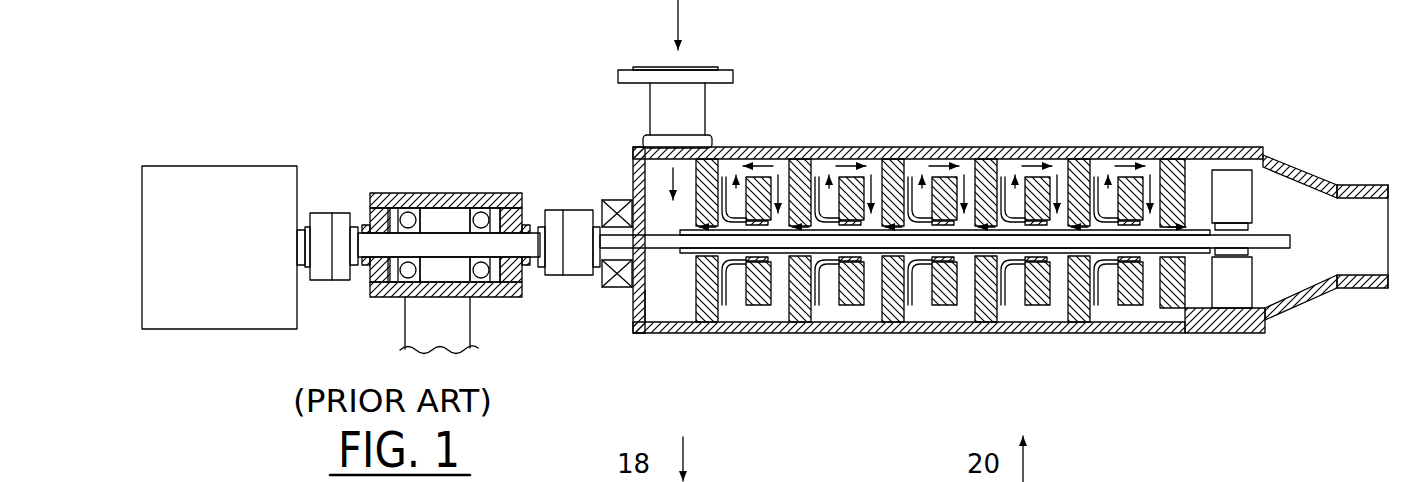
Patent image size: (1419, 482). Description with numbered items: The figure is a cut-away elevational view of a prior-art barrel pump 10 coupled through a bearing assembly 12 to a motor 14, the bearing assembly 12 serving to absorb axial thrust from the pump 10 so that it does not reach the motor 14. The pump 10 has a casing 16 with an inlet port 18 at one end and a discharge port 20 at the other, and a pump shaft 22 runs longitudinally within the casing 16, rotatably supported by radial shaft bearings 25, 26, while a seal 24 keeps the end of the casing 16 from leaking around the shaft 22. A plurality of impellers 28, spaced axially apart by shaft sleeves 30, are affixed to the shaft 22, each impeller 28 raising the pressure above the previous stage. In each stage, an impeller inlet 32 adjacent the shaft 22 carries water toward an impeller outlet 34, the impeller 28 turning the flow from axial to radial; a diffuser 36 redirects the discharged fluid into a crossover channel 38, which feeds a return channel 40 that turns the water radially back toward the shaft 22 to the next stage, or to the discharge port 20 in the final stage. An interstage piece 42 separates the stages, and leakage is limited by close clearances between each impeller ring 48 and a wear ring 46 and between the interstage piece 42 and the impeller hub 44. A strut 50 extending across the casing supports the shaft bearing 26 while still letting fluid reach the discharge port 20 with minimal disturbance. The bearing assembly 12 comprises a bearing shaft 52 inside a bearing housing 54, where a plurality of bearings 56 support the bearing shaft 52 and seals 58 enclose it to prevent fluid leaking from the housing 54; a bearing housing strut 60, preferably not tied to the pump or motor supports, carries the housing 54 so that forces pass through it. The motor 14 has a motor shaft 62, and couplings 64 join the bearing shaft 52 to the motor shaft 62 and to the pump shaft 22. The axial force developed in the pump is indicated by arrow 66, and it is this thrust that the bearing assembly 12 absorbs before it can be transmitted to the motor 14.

The barrel pump 10 is at (980, 194).
The bearing assembly 12 is at (436, 239).
The motor 14 is at (203, 175).
The casing 16 is at (976, 152).
The inlet port 18 is at (644, 67).
The discharge port 20 is at (1357, 208).
The pump shaft 22 is at (1060, 234).
The seal 24 is at (602, 265).
The radial shaft bearing 25 is at (626, 212).
The radial shaft bearing 26 is at (1242, 224).
The impeller 28 is at (742, 178).
The shaft sleeve 30 is at (868, 212).
The impeller inlet 32 is at (707, 172).
The impeller outlet 34 is at (1192, 184).
The diffuser 36 is at (730, 180).
The crossover channel 38 is at (801, 182).
The return channel 40 is at (778, 212).
The interstage piece 42 is at (760, 294).
The impeller hub 44 is at (786, 290).
The wear ring 46 is at (697, 265).
The impeller ring 48 is at (880, 285).
The strut 50 is at (1230, 178).
The bearing shaft 52 is at (360, 240).
The bearing housing 54 is at (474, 200).
The bearing 56 is at (420, 205).
The seal 58 is at (365, 226).
The bearing housing strut 60 is at (406, 340).
The motor shaft 62 is at (298, 245).
The coupling 64 is at (332, 213).
The arrow 66 is at (637, 297).